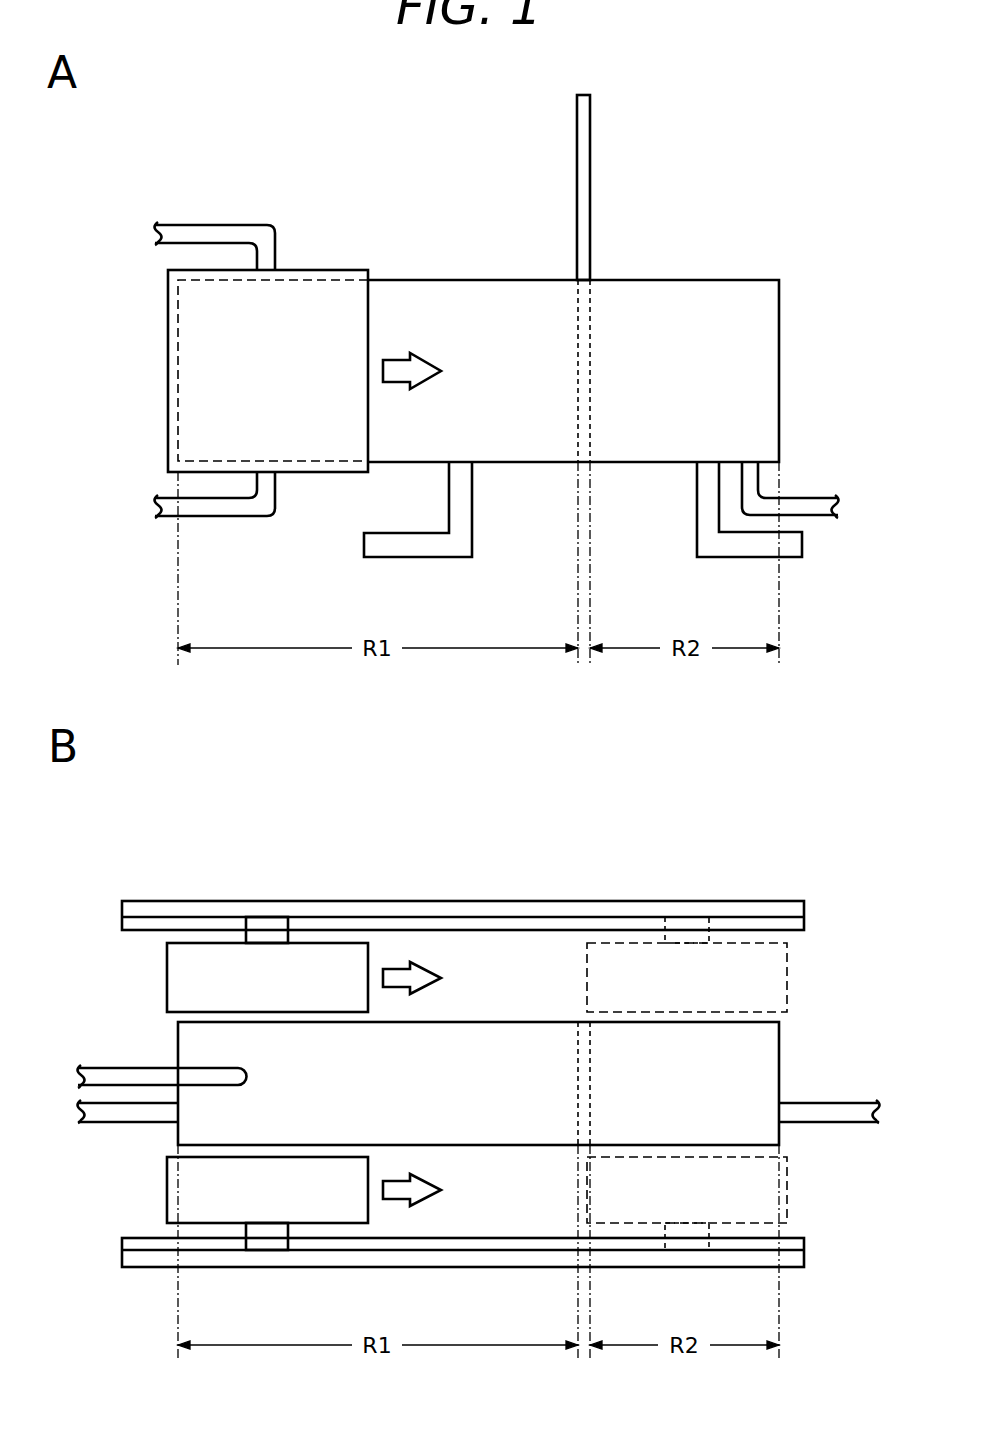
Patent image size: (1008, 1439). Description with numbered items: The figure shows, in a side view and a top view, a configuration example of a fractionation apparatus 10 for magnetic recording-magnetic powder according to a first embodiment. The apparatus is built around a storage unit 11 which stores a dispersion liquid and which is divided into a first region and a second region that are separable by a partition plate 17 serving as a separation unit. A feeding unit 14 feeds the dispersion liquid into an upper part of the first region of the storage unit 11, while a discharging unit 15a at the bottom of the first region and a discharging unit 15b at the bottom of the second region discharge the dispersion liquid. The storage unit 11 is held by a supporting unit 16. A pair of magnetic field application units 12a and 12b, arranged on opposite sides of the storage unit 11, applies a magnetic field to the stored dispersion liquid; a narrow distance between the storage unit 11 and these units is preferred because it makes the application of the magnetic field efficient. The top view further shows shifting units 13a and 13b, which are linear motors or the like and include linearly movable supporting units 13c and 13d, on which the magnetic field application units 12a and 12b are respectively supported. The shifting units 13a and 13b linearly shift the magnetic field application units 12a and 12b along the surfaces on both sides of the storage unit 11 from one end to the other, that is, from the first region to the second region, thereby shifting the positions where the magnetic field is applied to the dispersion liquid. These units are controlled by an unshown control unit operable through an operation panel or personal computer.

The fractionation apparatus 10 is at (787, 158).
The storage unit 11 is at (781, 403).
The magnetic field application unit 12a is at (167, 372).
The magnetic field application unit 12b is at (167, 984).
The shifting unit 13a is at (460, 1268).
The shifting unit 13b is at (460, 900).
The supporting unit 13c is at (248, 1232).
The supporting unit 13d is at (248, 937).
The feeding unit 14 is at (227, 225).
The discharging unit 15a is at (229, 518).
The discharging unit 15b is at (826, 517).
The supporting unit 16 is at (417, 559).
The partition plate 17 is at (594, 125).